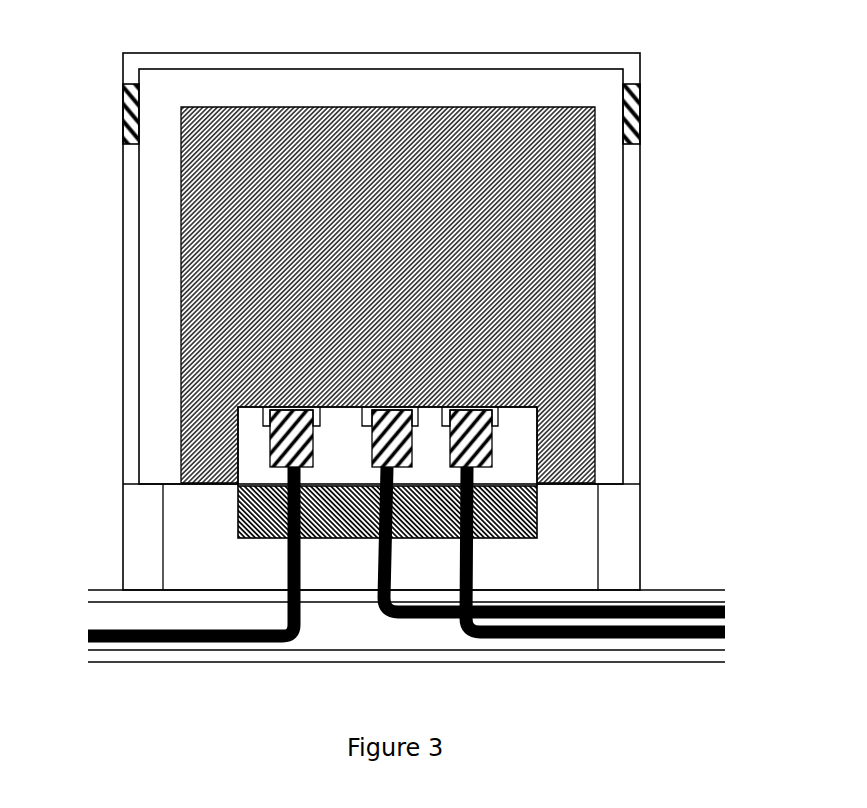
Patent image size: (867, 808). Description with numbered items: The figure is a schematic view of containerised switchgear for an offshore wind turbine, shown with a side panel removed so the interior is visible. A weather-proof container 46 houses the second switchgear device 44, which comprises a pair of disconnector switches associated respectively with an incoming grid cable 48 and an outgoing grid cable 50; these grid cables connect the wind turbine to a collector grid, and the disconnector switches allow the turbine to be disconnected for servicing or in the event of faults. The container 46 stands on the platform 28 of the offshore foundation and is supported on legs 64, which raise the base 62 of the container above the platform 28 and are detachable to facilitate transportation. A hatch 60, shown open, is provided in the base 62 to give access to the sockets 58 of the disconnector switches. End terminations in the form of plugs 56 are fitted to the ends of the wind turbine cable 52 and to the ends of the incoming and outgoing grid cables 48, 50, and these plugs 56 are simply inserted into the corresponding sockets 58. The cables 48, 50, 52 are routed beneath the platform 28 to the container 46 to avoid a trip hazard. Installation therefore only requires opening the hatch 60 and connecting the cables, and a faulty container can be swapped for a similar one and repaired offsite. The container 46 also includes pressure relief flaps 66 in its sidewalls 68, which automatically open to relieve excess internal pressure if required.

The platform 28 is at (697, 592).
The second switchgear device 44 is at (565, 213).
The container 46 is at (390, 53).
The incoming grid cable 48 is at (393, 555).
The outgoing grid cable 50 is at (474, 557).
The wind turbine cable 52 is at (289, 560).
The plugs 56 is at (316, 448).
The sockets 58 is at (264, 410).
The hatch 60 is at (537, 510).
The base 62 is at (178, 492).
The legs 64 is at (135, 527).
The pressure relief flaps 66 is at (123, 90).
The sidewalls 68 is at (128, 246).